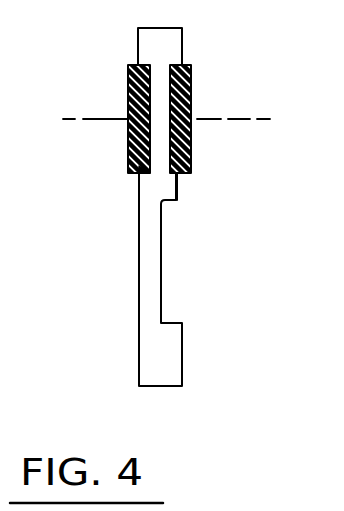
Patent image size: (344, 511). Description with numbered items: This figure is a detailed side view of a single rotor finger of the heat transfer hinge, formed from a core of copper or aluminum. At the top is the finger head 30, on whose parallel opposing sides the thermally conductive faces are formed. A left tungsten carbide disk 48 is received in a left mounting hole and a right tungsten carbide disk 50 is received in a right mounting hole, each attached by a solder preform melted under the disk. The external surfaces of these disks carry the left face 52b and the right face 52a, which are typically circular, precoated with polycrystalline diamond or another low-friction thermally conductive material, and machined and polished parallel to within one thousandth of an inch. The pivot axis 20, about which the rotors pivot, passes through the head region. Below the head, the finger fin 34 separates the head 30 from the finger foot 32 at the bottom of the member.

The first rotor finger head 30 is at (175, 55).
The right thermally conductive face 52a is at (193, 93).
The left thermally conductive face 52b is at (128, 78).
The pivot axis 20 is at (227, 120).
The left tungsten carbide disk 48 is at (148, 173).
The right tungsten carbide disk 50 is at (182, 176).
The first rotor finger fin 34 is at (130, 208).
The first rotor finger foot 32 is at (162, 362).